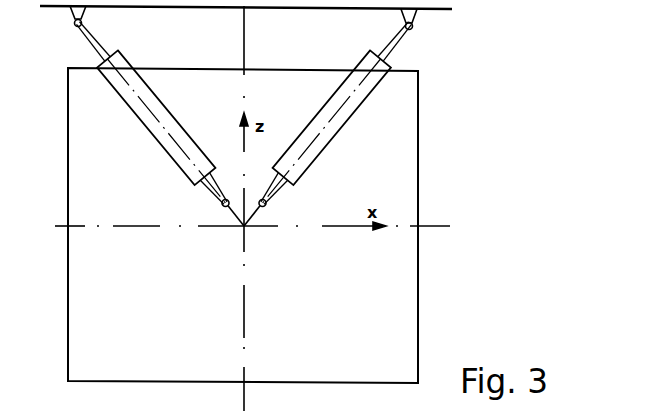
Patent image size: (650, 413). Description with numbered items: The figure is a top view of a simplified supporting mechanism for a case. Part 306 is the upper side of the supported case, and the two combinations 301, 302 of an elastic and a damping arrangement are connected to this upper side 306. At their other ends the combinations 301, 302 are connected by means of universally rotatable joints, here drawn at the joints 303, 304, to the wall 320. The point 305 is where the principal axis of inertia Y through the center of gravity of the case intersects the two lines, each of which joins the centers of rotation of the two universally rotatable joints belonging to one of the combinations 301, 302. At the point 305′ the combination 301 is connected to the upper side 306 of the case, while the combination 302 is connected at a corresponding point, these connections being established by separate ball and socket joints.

The combination of an elastic and a damping arrangement 301 is at (152, 113).
The combination of an elastic and a damping arrangement 302 is at (336, 113).
The pivot joint of first actuator on frame 303 is at (63, 23).
The pivot joint of second actuator on frame 304 is at (426, 25).
The intersection point 305 is at (255, 229).
The connection point 305′ is at (201, 207).
The upper side of the supported case 306 is at (243, 225).
The wall 320 is at (246, 20).